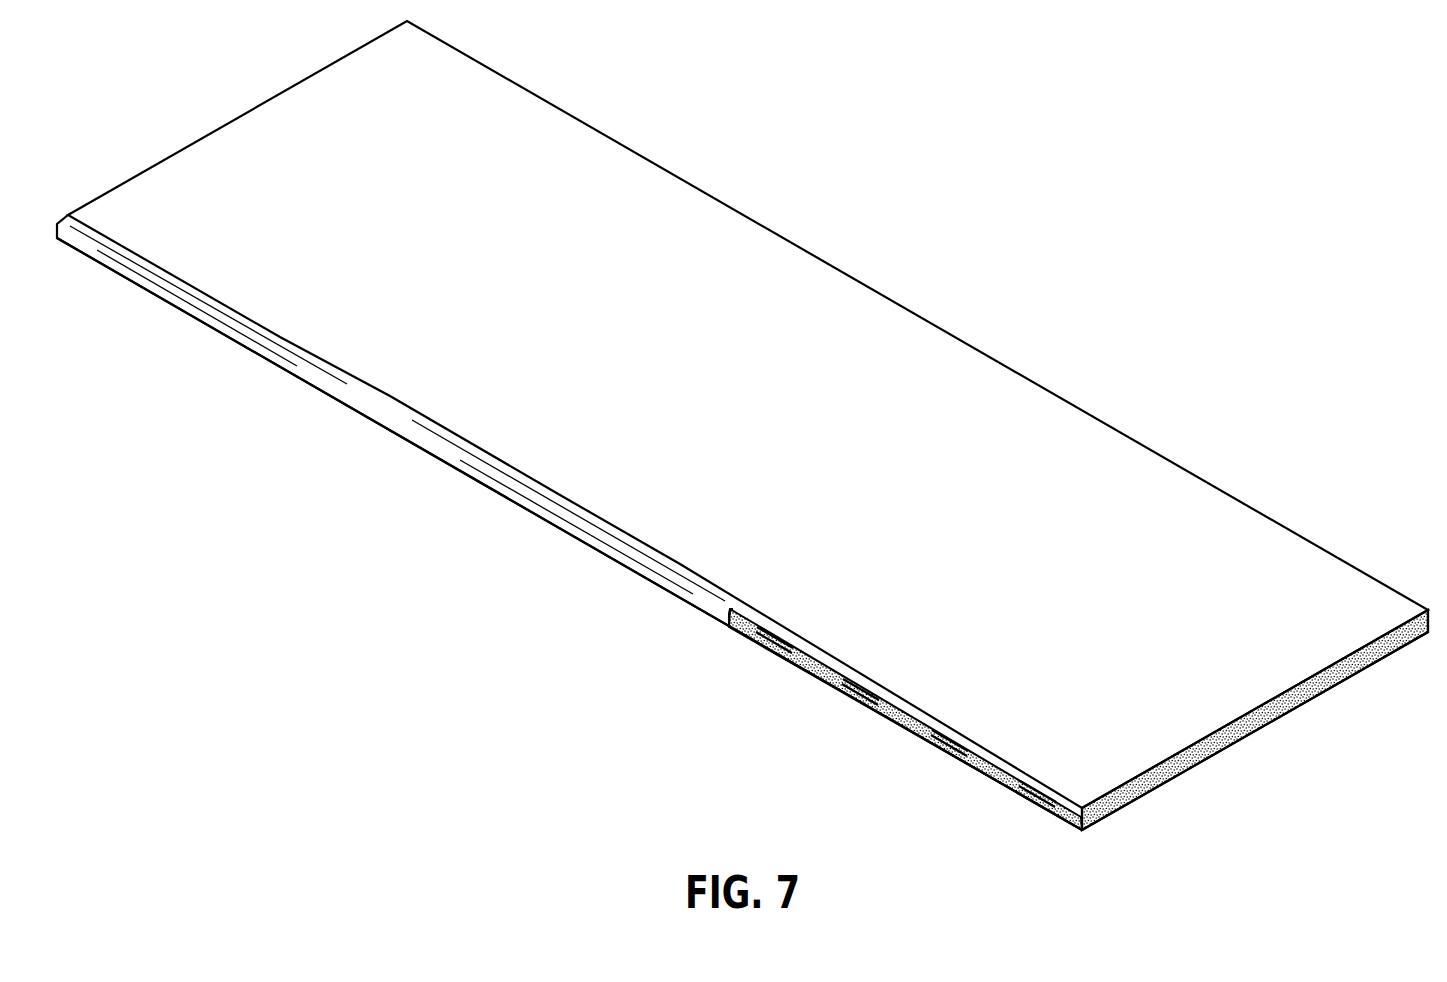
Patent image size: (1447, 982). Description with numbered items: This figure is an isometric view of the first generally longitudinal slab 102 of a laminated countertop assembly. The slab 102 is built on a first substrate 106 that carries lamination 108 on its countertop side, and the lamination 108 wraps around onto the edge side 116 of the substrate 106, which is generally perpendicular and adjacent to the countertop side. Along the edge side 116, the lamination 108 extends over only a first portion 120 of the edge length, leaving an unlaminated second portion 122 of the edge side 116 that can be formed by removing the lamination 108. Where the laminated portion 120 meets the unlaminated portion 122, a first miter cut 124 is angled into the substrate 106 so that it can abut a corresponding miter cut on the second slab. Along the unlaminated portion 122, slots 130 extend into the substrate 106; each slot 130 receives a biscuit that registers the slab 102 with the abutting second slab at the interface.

The first generally longitudinal slab 102 is at (970, 215).
The first substrate 106 is at (1080, 438).
The lamination 108 is at (253, 345).
The edge side 116 is at (382, 418).
The first portion 120 is at (535, 510).
The unlaminated second portion 122 is at (820, 667).
The first miter cut 124 is at (732, 617).
The slots 130 is at (1037, 797).